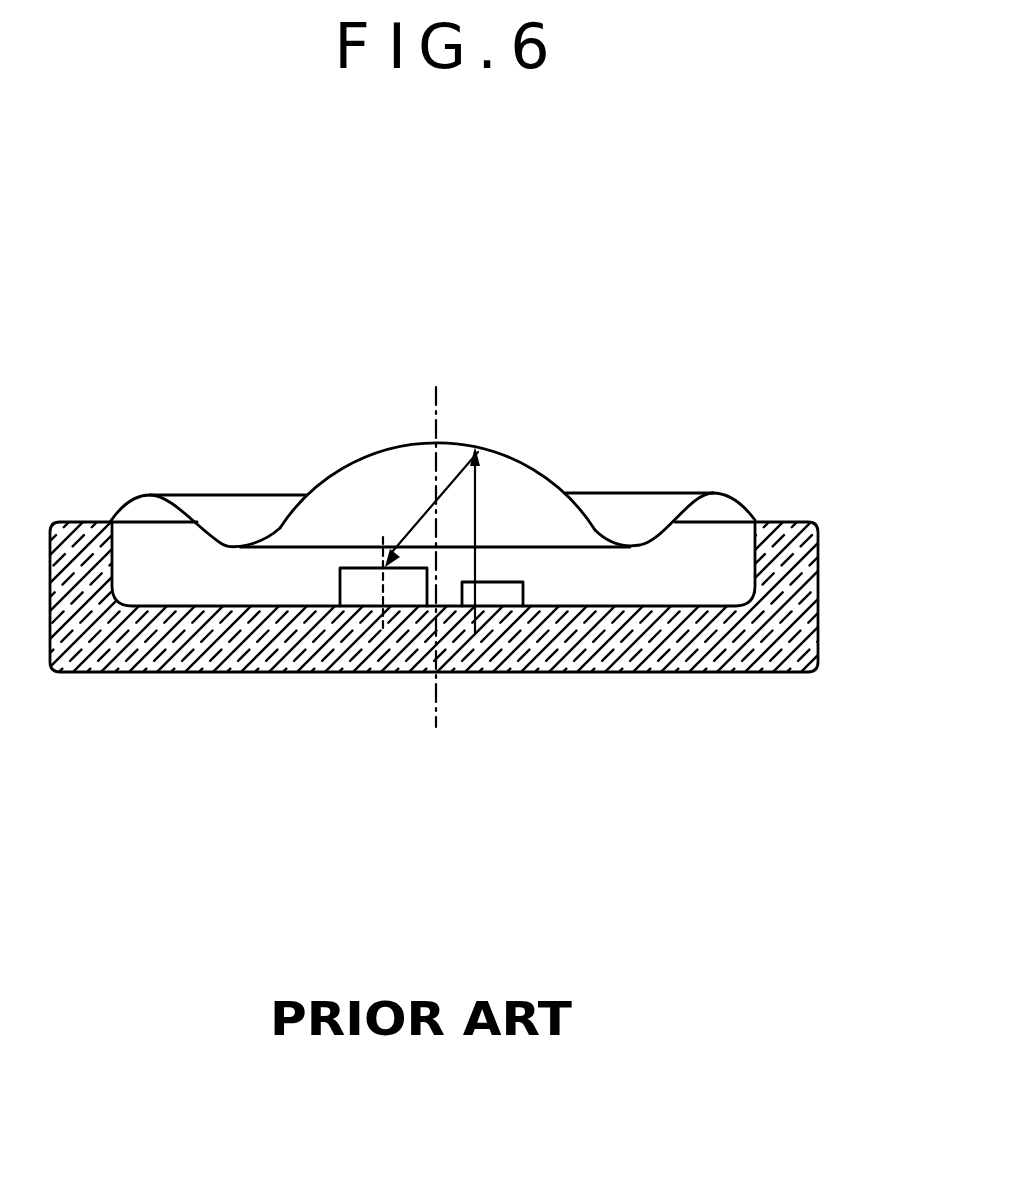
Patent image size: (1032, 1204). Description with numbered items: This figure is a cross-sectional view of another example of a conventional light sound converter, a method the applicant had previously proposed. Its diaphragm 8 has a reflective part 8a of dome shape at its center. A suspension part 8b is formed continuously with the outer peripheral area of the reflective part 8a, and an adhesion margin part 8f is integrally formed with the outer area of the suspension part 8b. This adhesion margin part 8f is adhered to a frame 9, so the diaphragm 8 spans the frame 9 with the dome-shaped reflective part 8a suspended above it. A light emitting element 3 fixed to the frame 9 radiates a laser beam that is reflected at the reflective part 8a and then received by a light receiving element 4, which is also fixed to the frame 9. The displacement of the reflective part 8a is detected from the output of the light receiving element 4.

The light emitting element 3 is at (493, 596).
The light receiving element 4 is at (368, 590).
The diaphragm 8 is at (502, 429).
The reflective part 8a is at (518, 452).
The suspension part 8b is at (627, 545).
The adhesion margin part 8f is at (785, 520).
The frame 9 is at (818, 590).